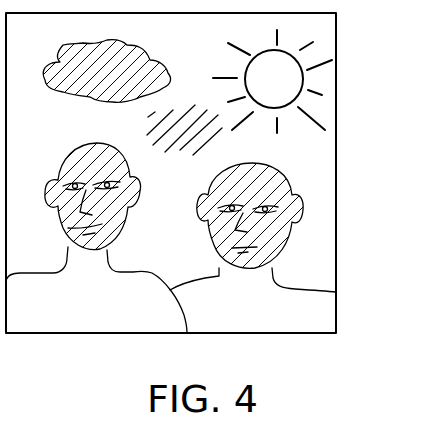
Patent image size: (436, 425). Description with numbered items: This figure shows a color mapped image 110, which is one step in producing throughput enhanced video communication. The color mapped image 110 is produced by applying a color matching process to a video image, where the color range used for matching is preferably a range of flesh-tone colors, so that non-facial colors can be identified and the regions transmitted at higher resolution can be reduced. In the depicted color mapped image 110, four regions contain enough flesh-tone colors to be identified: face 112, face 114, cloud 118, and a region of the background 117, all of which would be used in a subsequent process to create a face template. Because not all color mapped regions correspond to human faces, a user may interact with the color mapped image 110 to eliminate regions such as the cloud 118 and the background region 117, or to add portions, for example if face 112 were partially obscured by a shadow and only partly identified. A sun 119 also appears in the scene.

The color mapped image 110 is at (338, 88).
The face 112 is at (76, 143).
The face 114 is at (283, 183).
The background region 117 is at (173, 146).
The cloud 118 is at (76, 45).
The sun 119 is at (270, 50).